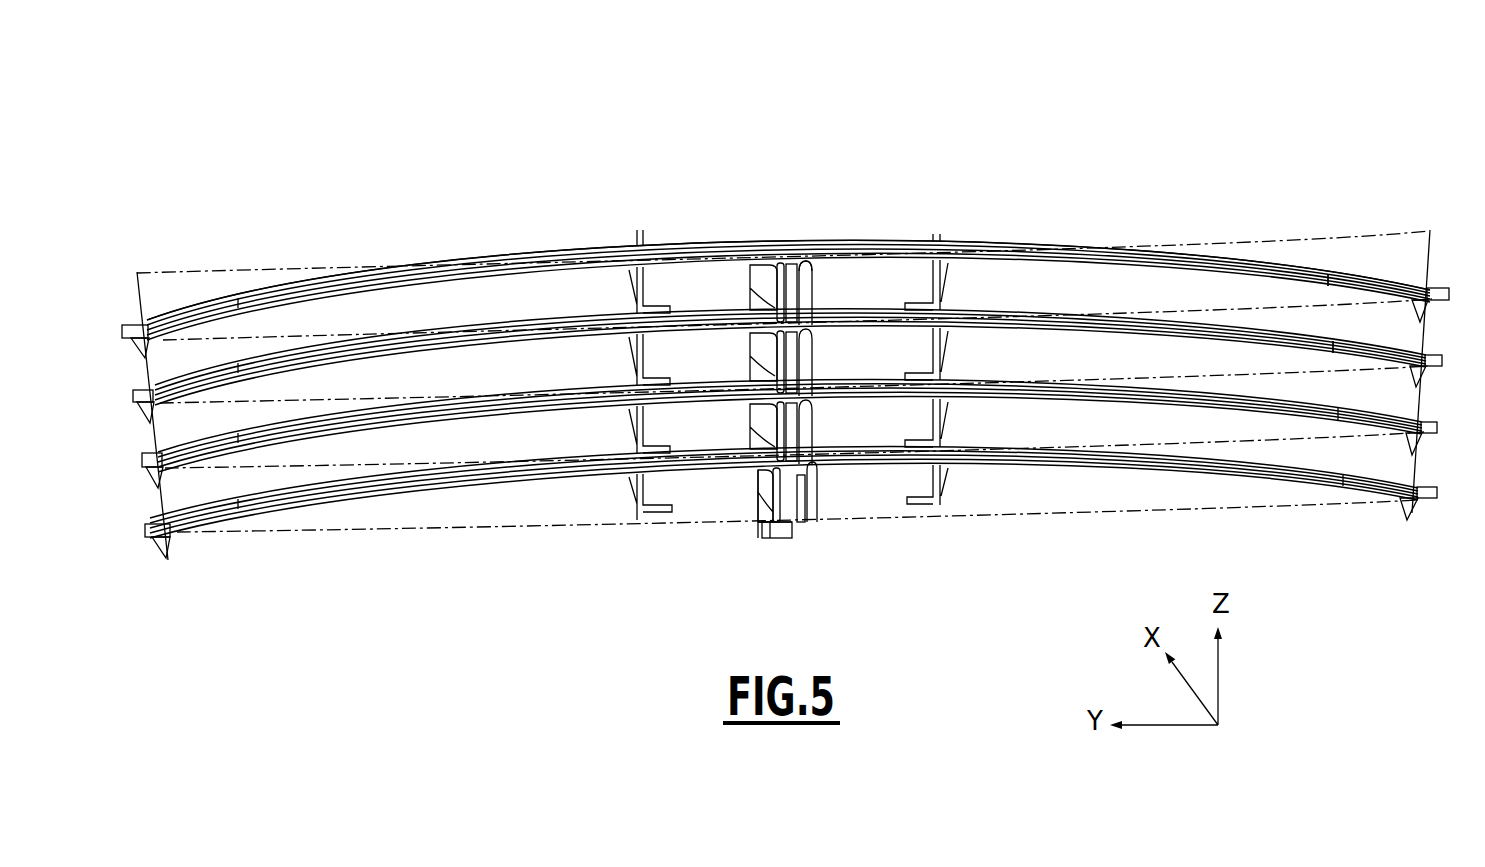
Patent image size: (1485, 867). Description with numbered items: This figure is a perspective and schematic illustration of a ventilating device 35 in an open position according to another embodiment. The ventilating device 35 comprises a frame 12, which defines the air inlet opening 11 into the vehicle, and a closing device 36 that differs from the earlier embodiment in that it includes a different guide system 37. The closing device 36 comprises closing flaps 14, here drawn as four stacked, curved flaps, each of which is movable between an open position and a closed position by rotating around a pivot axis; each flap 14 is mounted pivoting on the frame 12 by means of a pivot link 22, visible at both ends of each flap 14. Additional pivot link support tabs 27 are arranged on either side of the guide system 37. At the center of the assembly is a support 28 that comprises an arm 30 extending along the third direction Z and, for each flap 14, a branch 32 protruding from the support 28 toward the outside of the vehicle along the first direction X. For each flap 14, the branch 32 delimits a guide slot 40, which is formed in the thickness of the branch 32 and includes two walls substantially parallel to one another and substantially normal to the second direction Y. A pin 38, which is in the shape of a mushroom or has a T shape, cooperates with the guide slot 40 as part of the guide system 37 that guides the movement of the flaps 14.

The air inlet opening 11 is at (1168, 289).
The frame 12 is at (1397, 222).
The closing flap 14 is at (1070, 243).
The pivot link 22 is at (122, 352).
The additional pivot link support tabs 27 is at (600, 293).
The support 28 is at (754, 545).
The arm 30 is at (778, 530).
The branch 32 is at (763, 280).
The ventilating device 35 is at (1170, 100).
The closing device 36 is at (1011, 212).
The guide system 37 is at (786, 217).
The pin 38 is at (793, 262).
The guide slot 40 is at (790, 295).